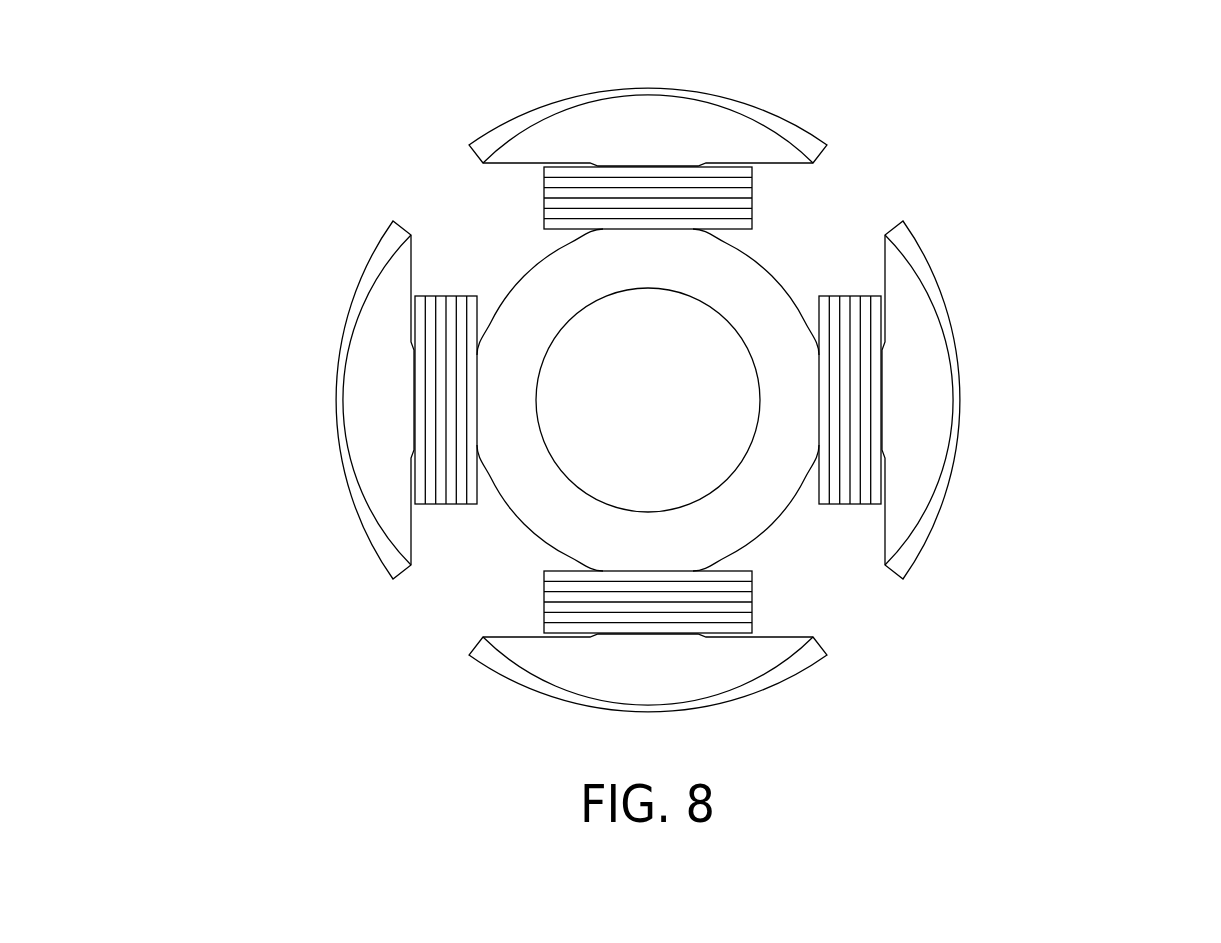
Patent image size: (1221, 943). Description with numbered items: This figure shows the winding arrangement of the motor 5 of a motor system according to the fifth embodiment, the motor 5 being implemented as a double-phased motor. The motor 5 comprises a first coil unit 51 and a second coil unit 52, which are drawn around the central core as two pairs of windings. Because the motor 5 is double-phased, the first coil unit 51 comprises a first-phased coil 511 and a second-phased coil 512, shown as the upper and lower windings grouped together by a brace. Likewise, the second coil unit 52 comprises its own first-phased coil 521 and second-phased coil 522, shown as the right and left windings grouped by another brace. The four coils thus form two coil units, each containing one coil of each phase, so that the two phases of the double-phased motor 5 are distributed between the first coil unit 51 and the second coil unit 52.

The motor 5 is at (677, 372).
The first coil unit 51 is at (878, 400).
The first-phased coil 511 is at (750, 195).
The second-phased coil 512 is at (750, 602).
The second coil unit 52 is at (511, 477).
The first-phased coil 521 is at (828, 413).
The second-phased coil 522 is at (437, 417).